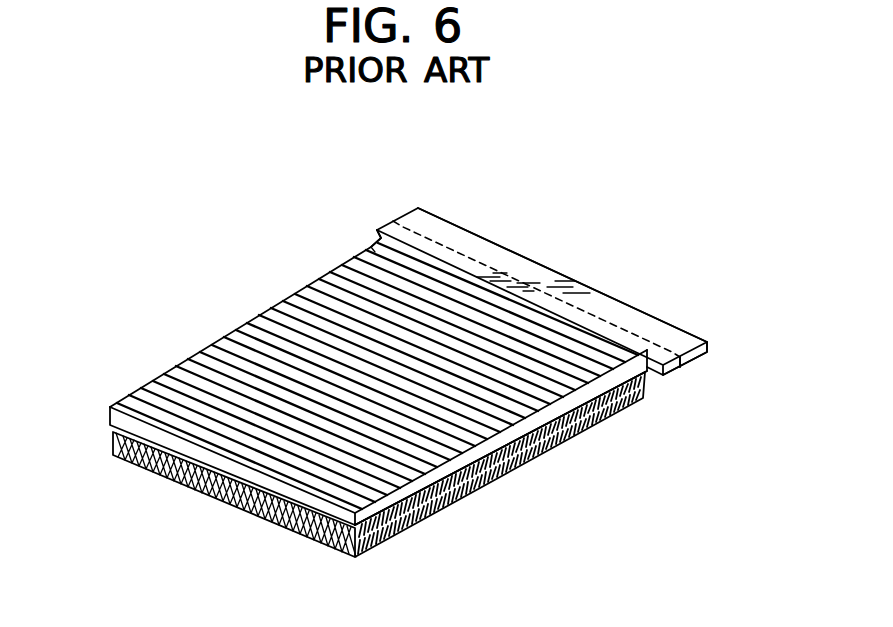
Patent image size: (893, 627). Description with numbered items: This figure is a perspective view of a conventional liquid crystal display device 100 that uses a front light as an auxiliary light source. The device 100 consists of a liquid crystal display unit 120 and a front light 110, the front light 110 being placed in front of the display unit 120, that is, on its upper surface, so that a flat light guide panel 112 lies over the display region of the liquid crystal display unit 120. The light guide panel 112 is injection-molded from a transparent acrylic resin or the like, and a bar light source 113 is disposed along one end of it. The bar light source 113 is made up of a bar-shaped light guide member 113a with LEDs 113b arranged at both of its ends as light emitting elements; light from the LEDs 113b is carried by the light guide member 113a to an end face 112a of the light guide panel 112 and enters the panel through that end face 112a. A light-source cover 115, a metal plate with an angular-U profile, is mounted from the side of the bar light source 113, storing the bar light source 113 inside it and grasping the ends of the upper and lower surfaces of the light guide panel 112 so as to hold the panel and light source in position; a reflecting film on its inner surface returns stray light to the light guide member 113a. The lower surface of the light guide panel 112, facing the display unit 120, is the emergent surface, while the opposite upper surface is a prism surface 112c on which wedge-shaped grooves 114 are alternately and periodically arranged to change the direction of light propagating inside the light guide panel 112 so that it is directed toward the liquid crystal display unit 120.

The liquid crystal display device 100 is at (282, 297).
The front light 110 is at (120, 398).
The light guide panel 112 is at (543, 417).
The end face 112a is at (538, 286).
The prism surface 112c is at (378, 243).
The bar light source 113 is at (645, 316).
The light guide member 113a is at (497, 257).
The LEDs 113b is at (420, 206).
The wedge-shaped grooves 114 is at (217, 398).
The light-source cover 115 is at (583, 286).
The liquid crystal display unit 120 is at (497, 478).